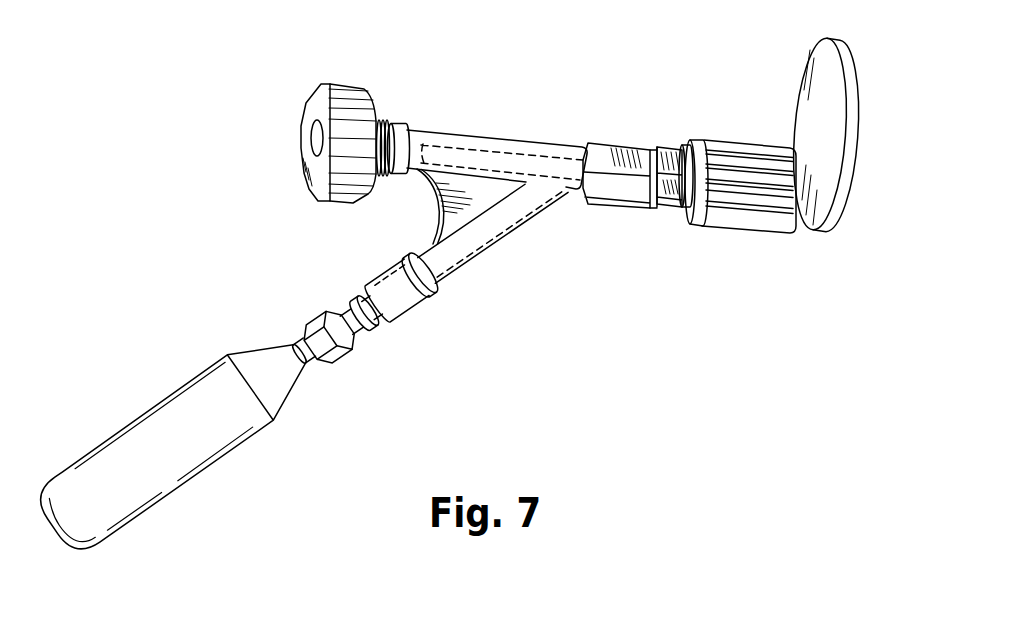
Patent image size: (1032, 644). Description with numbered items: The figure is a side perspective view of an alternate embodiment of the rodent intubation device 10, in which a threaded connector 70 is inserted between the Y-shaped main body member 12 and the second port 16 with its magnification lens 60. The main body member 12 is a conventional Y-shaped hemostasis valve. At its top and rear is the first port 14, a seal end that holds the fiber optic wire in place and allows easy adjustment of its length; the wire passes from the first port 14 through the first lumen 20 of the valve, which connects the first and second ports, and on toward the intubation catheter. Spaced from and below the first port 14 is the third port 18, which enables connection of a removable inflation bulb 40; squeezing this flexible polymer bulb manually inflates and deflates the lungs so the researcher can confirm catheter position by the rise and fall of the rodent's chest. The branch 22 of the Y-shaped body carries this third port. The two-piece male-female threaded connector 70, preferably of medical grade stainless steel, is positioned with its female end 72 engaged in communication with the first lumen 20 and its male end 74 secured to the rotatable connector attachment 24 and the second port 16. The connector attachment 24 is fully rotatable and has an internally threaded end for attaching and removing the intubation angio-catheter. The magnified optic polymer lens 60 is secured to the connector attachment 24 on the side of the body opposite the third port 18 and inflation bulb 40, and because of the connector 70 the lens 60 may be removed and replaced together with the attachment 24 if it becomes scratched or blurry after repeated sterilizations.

The device 10 is at (584, 339).
The main body member 12 is at (460, 105).
The first port 14 is at (352, 62).
The second port 16 is at (750, 191).
The third port 18 is at (429, 322).
The first lumen 20 is at (493, 150).
The branch tube 22 is at (505, 240).
The rotatable connector attachment 24 is at (777, 256).
The inflation bulb 40 is at (260, 439).
The magnification lens 60 is at (810, 68).
The threaded connector 70 is at (640, 118).
The female end 72 is at (603, 207).
The male end 74 is at (667, 205).